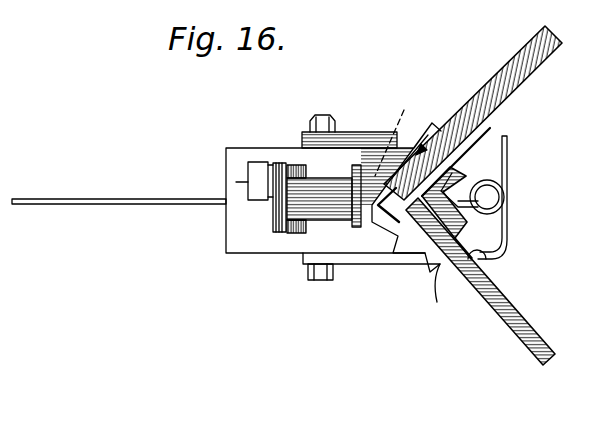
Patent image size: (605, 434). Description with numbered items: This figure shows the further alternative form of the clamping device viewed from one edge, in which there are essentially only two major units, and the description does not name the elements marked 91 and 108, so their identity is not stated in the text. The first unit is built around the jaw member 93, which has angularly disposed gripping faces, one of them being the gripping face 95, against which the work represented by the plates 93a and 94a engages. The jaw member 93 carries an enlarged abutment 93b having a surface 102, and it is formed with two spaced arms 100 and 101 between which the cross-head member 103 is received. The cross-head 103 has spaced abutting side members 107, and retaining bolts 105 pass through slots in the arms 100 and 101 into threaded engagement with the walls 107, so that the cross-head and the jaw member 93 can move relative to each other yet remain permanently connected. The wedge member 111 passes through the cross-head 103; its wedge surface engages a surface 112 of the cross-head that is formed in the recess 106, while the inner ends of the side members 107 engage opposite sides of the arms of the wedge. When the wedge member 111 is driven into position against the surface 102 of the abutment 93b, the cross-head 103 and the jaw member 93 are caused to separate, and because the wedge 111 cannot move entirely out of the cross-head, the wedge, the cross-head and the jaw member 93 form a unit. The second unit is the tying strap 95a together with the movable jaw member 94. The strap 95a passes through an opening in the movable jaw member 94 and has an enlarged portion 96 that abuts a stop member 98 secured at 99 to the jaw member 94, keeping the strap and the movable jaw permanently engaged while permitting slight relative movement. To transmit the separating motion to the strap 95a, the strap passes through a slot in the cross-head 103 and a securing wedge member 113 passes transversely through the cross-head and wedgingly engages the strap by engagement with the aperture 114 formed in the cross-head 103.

The bracket 91 is at (470, 197).
The jaw member 93 is at (384, 244).
The plate 93a is at (497, 104).
The enlarged abutment 93b is at (401, 130).
The movable jaw member 94 is at (480, 232).
The plate 94a is at (506, 303).
The gripping face 95 is at (441, 134).
The tying strap 95a is at (194, 205).
The enlarged portion 96 is at (507, 170).
The stop member 98 is at (502, 196).
The securing point 99 is at (492, 260).
The spaced arm 100 is at (313, 127).
The spaced arm 101 is at (343, 268).
The surface 102 is at (342, 153).
The cross-head member 103 is at (258, 238).
The retaining bolt 105 is at (307, 130).
The recess 106 is at (280, 160).
The side member 107 is at (284, 160).
The core 108 is at (342, 188).
The wedge member 111 is at (290, 190).
The surface 112 is at (290, 229).
The securing wedge member 113 is at (248, 171).
The aperture 114 is at (246, 158).